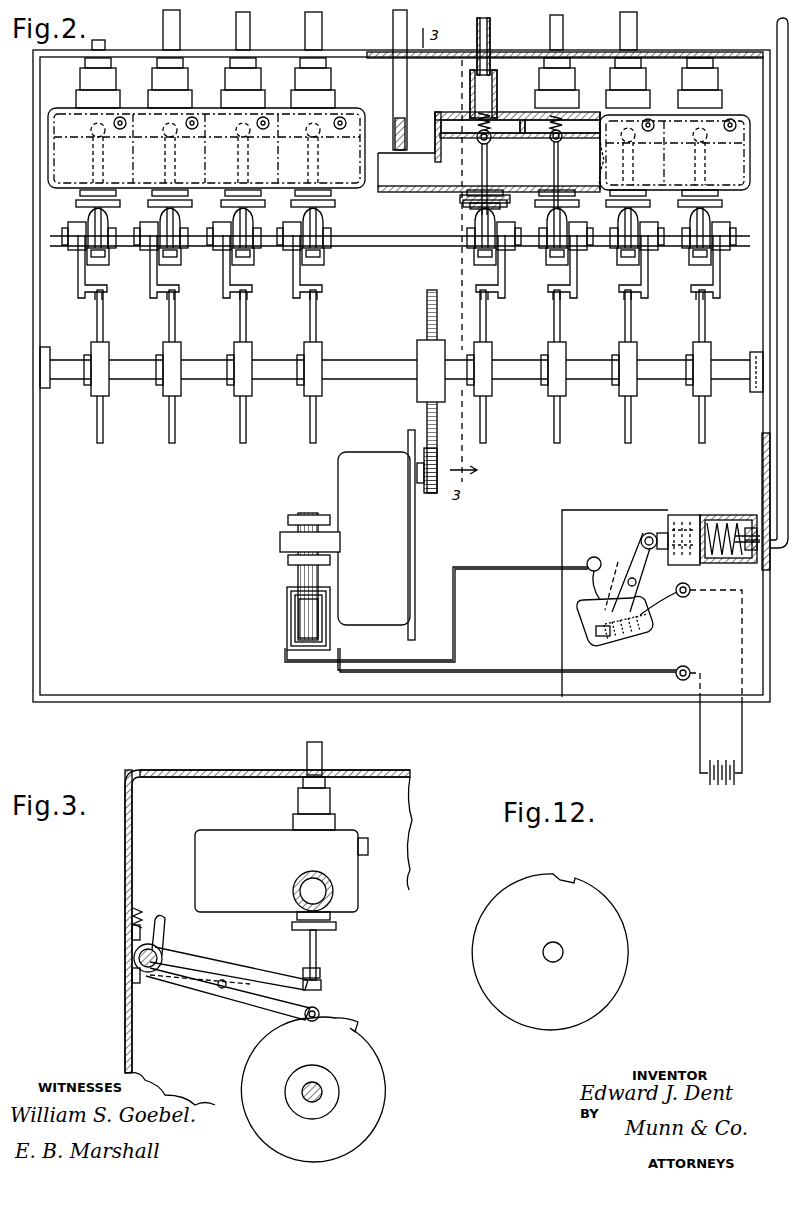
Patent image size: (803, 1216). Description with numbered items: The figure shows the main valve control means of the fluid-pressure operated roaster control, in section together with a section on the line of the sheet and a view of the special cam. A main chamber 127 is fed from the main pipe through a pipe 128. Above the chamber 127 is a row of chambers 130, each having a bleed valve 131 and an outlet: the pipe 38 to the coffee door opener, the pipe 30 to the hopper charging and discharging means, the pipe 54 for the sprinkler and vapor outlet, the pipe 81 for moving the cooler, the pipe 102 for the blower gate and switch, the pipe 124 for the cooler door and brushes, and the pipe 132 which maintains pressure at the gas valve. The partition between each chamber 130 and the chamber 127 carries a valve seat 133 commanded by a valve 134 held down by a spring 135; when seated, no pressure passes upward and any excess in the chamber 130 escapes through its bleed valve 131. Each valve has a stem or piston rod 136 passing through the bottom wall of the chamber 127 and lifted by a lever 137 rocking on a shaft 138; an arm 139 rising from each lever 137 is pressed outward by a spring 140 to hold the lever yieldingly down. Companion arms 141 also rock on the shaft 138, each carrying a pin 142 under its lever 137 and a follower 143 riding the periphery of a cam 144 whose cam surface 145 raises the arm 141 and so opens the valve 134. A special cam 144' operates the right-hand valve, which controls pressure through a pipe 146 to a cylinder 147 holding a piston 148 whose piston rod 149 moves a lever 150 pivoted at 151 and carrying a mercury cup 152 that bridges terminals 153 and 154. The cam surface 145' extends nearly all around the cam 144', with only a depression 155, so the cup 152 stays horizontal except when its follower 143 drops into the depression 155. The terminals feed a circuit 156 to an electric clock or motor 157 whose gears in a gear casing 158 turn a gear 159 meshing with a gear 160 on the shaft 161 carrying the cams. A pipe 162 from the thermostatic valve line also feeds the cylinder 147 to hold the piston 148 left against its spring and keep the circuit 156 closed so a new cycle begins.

In FIG. 2, the pipe 30 is at (180, 37).
In FIG. 2, the pipe 38 is at (105, 46).
In FIG. 2, the pipe 54 is at (250, 37).
In FIG. 2, the pipe 81 is at (322, 37).
In FIG. 2, the pipe 102 is at (492, 46).
In FIG. 3, the pipe 102 is at (322, 760).
In FIG. 2, the pipe 124 is at (637, 42).
In FIG. 2, the chamber 127 is at (393, 190).
In FIG. 3, the chamber 127 is at (292, 892).
In FIG. 2, the pipe 128 is at (393, 82).
In FIG. 2, the chambers 130 is at (508, 118).
In FIG. 2, the bleed valve 131 is at (263, 121).
In FIG. 3, the bleed valve 131 is at (366, 855).
In FIG. 2, the pipe 132 is at (563, 43).
In FIG. 2, the valve seat 133 is at (492, 140).
In FIG. 2, the valve 134 is at (240, 128).
In FIG. 2, the spring 135 is at (470, 95).
In FIG. 2, the piston rod 136 is at (244, 220).
In FIG. 3, the piston rod 136 is at (320, 950).
In FIG. 2, the lever 137 is at (246, 266).
In FIG. 3, the lever 137 is at (261, 970).
In FIG. 2, the shaft 138 is at (408, 247).
In FIG. 3, the shaft 138 is at (150, 974).
In FIG. 3, the arm 139 is at (165, 937).
In FIG. 3, the spring 140 is at (148, 914).
In FIG. 2, the arm 141 is at (226, 287).
In FIG. 3, the arm 141 is at (256, 1005).
In FIG. 3, the pin 142 is at (220, 990).
In FIG. 2, the follower 143 is at (226, 300).
In FIG. 3, the follower 143 is at (320, 1012).
In FIG. 2, the cam 144 is at (417, 366).
In FIG. 3, the cam 144 is at (331, 1089).
In FIG. 2, the special cam 144' is at (433, 375).
In FIG. 12, the special cam 144' is at (560, 952).
In FIG. 3, the cam surface 145 is at (378, 1017).
In FIG. 12, the cam surface 145' is at (606, 971).
In FIG. 2, the pipe 146 is at (762, 472).
In FIG. 2, the cylinder 147 is at (678, 516).
In FIG. 2, the piston 148 is at (749, 563).
In FIG. 2, the piston rod 149 is at (726, 545).
In FIG. 2, the lever 150 is at (641, 547).
In FIG. 2, the pivot 151 is at (638, 580).
In FIG. 2, the cup 152 is at (592, 628).
In FIG. 2, the terminal 153 is at (578, 606).
In FIG. 2, the terminal 154 is at (630, 578).
In FIG. 12, the depression 155 is at (565, 878).
In FIG. 2, the circuit 156 is at (505, 567).
In FIG. 2, the electric clock or motor 157 is at (298, 532).
In FIG. 2, the gear casing 158 is at (338, 484).
In FIG. 2, the gear 159 is at (432, 493).
In FIG. 2, the gear 160 is at (427, 415).
In FIG. 2, the shaft 161 is at (359, 362).
In FIG. 3, the shaft 161 is at (306, 1102).
In FIG. 2, the pipe 162 is at (775, 550).